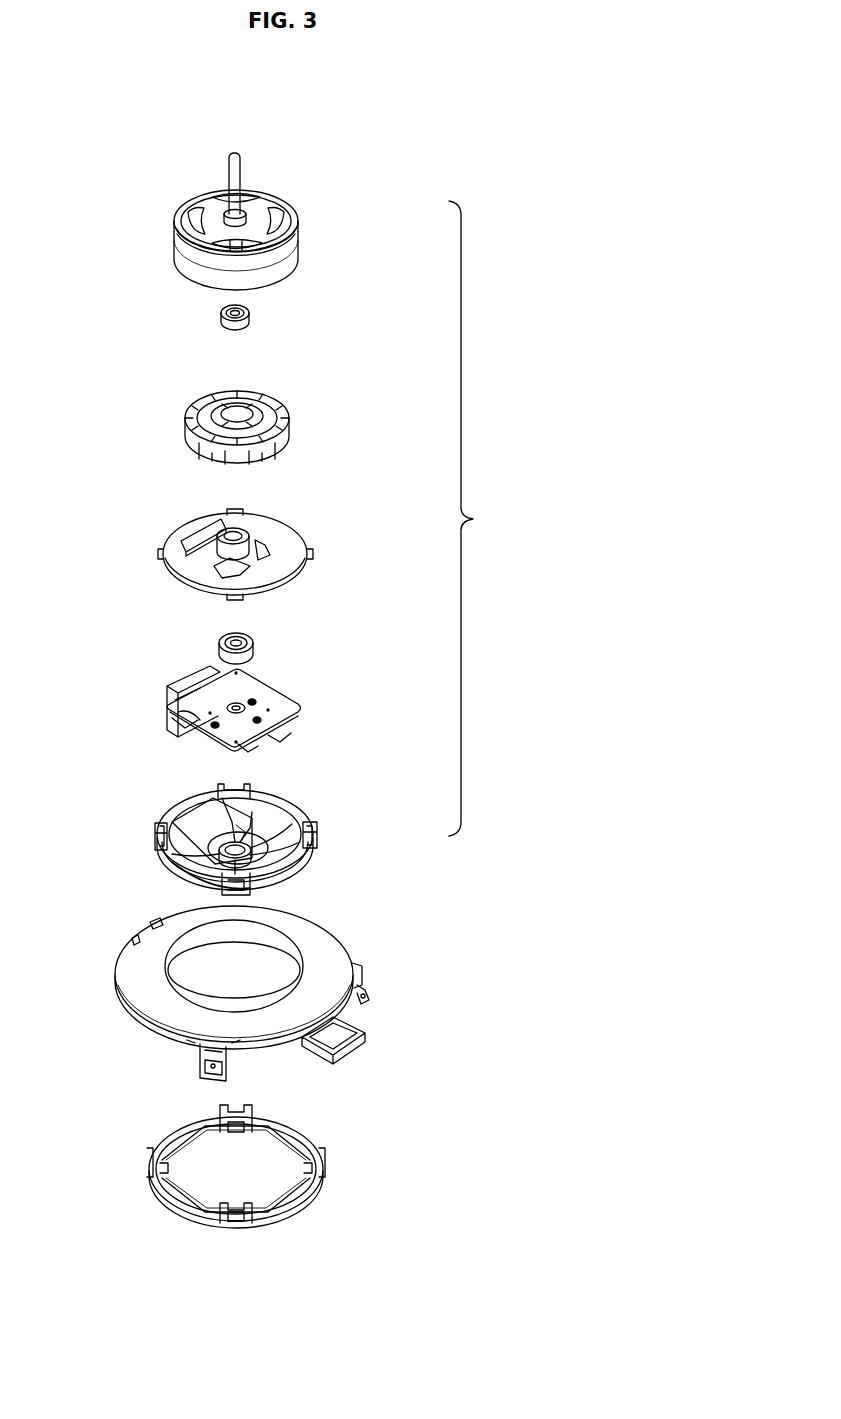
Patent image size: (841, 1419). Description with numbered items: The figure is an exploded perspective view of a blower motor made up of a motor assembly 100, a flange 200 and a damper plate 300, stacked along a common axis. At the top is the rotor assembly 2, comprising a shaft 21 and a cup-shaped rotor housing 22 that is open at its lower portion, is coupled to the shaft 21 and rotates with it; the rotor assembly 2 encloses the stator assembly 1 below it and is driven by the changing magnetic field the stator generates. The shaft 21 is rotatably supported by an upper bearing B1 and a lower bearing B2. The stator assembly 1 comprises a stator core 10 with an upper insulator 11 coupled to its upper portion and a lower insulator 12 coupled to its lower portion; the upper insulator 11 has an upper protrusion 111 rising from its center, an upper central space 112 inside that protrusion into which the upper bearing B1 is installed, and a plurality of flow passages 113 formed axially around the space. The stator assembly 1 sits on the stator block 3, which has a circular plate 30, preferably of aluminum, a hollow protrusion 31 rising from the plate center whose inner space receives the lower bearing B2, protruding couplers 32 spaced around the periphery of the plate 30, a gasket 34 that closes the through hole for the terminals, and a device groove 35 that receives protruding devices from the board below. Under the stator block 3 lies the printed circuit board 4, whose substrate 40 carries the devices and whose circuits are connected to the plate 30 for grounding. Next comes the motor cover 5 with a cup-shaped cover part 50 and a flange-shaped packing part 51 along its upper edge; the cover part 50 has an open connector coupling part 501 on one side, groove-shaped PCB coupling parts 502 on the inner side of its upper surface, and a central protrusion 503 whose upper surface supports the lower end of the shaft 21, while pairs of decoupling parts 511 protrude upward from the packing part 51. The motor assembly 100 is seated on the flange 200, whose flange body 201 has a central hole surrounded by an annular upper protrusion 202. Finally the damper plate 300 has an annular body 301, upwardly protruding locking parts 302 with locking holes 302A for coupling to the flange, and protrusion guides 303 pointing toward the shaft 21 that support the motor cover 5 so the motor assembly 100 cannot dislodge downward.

The motor assembly 100 is at (489, 518).
The rotor assembly 2 is at (270, 221).
The shaft 21 is at (240, 183).
The rotor housing 22 is at (181, 250).
The upper bearing B1 is at (250, 322).
The stator assembly 1 is at (266, 424).
The stator core 10 is at (198, 447).
The upper insulator 11 is at (195, 428).
The upper protrusion 111 is at (212, 414).
The upper central space 112 is at (238, 410).
The flow passages 113 is at (222, 405).
The lower insulator 12 is at (222, 462).
The stator block 3 is at (269, 560).
The plate 30 is at (283, 533).
The hollow protrusion 31 is at (222, 552).
The protruding coupler 32 is at (248, 510).
The gasket 34 is at (225, 568).
The device groove 35 is at (190, 543).
The lower bearing B2 is at (253, 652).
The printed circuit board 4 is at (270, 719).
The substrate 40 is at (170, 707).
The motor cover 5 is at (250, 825).
The cover part 50 is at (248, 812).
The packing part 51 is at (172, 866).
The connector coupling part 501 is at (185, 807).
The PCB coupling parts 502 is at (305, 826).
The central protrusion 503 is at (200, 882).
The decoupling parts 511 is at (222, 790).
The flange 200 is at (249, 981).
The flange body 201 is at (332, 973).
The upper protrusion 202 is at (178, 950).
The damper plate 300 is at (294, 1161).
The annular body 301 is at (283, 1128).
The locking parts 302 is at (245, 1108).
The locking hole 302A is at (240, 1224).
The protrusion guides 303 is at (220, 1125).